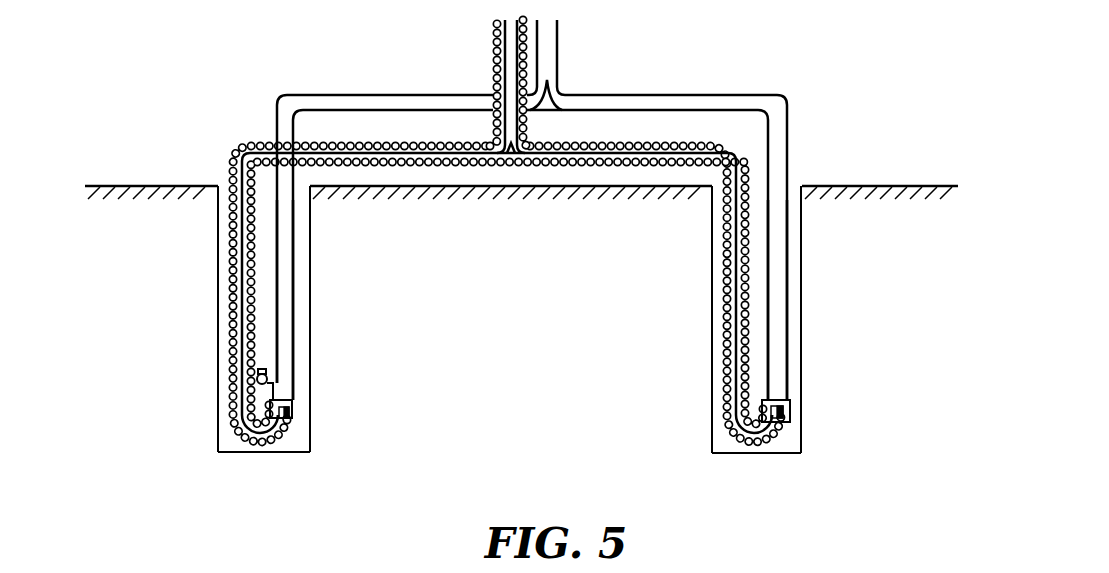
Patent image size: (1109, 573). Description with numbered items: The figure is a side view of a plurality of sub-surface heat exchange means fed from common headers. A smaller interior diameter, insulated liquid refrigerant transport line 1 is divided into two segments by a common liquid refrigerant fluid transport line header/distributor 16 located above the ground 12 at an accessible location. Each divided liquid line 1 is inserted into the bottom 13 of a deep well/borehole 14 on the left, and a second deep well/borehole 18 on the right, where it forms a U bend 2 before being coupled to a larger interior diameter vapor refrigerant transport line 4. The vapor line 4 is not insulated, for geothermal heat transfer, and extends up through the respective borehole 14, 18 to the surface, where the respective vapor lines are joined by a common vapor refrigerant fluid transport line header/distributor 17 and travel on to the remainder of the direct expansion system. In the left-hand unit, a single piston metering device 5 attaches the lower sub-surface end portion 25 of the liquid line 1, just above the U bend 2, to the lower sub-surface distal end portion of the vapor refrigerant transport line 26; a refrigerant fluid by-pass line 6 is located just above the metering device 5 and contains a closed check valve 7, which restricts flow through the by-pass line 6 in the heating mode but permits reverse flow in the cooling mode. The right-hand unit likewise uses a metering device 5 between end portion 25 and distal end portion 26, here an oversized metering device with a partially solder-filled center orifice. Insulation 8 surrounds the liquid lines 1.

The liquid/fluid refrigerant transport line 1 is at (242, 248).
The U bend 2 is at (252, 445).
The vapor/fluid refrigerant transport line 4 is at (282, 330).
The single piston metering device 5 is at (291, 412).
The refrigerant fluid by-pass line 6 is at (270, 368).
The closed check valve 7 is at (268, 385).
The bead insulation 8 is at (230, 317).
The ground 12 is at (907, 198).
The bottom of the deep well/borehole 13 is at (218, 452).
The deep well/borehole 14 is at (310, 271).
The common liquid refrigerant fluid transport line header/distributor 16 is at (493, 137).
The common vapor refrigerant fluid transport line header/distributor 17 is at (556, 85).
The deep well/borehole 18 is at (802, 272).
The lower sub-surface end portion of the liquid refrigerant transport line 25 is at (292, 418).
The lower sub-surface distal end portion of the vapor refrigerant transport line 26 is at (290, 398).